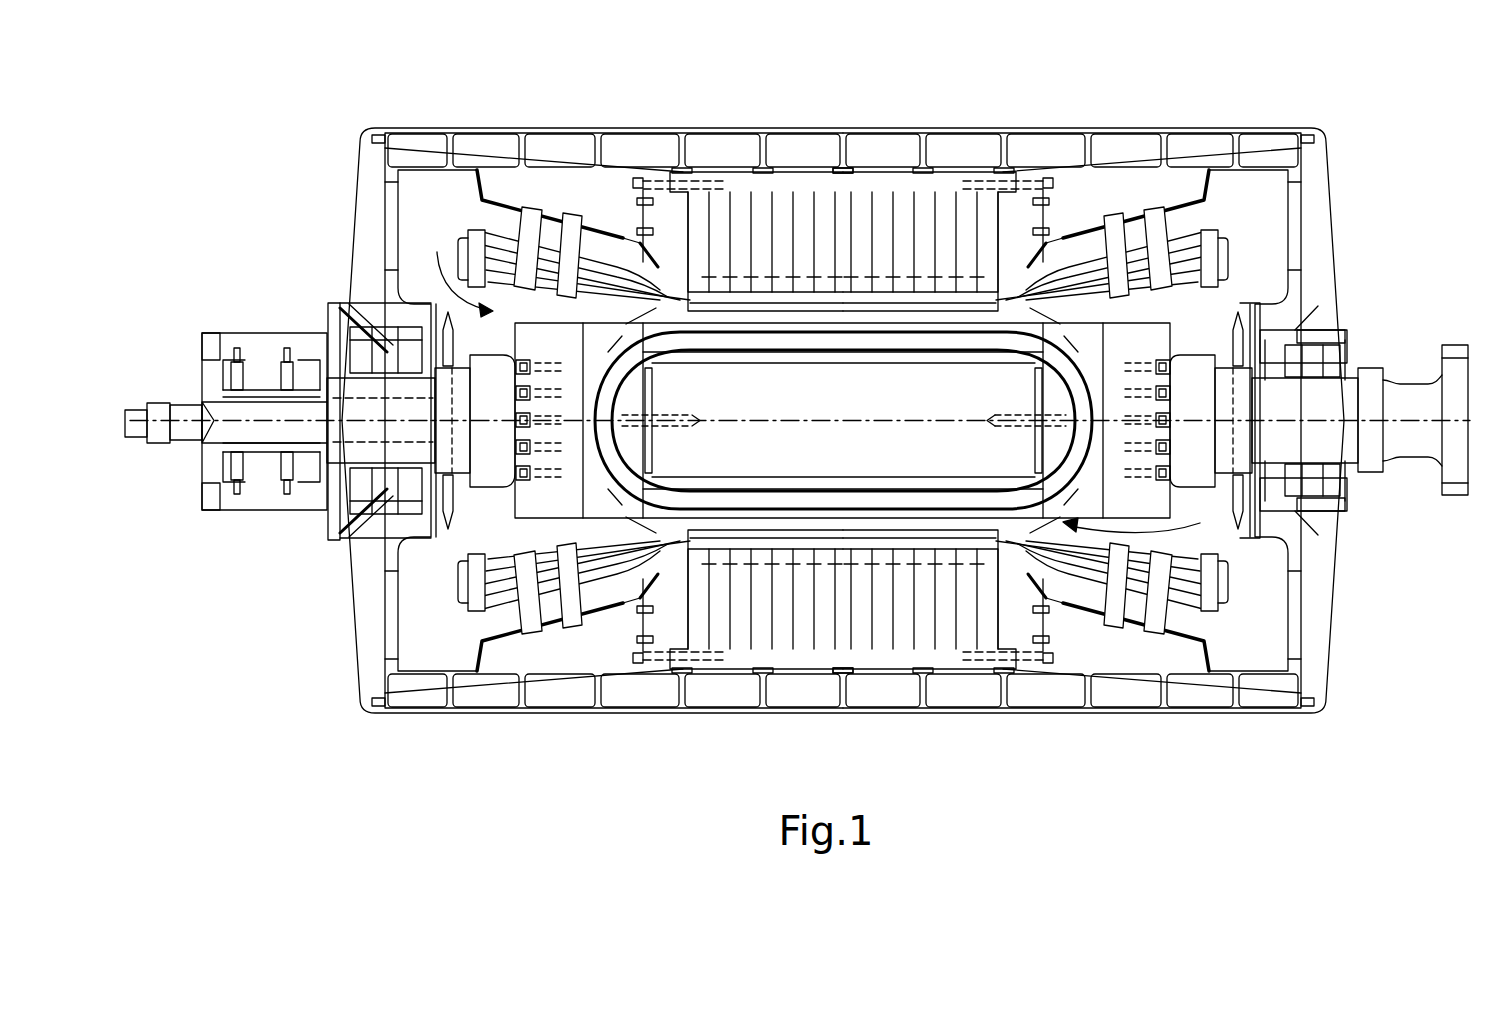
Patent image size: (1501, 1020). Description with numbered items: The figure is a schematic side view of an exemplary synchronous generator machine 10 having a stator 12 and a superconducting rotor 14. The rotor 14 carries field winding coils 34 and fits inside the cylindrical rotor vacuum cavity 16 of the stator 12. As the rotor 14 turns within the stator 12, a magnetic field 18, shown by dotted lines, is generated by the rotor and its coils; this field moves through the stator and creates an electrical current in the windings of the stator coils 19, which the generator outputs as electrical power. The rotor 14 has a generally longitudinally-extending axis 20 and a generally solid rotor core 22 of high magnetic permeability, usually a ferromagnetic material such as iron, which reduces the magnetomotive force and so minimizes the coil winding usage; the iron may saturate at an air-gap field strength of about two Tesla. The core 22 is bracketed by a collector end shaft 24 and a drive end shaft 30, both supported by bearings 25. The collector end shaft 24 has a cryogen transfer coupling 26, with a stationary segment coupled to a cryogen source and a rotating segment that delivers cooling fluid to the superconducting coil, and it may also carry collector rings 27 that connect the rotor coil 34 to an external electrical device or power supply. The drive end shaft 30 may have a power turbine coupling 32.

The synchronous generator machine 10 is at (536, 50).
The stator 12 is at (743, 210).
The rotor 14 is at (540, 514).
The rotor vacuum cavity 16 is at (823, 377).
The magnetic field 18 is at (950, 268).
The stator coils 19 is at (1185, 240).
The longitudinally-extending axis 20 is at (362, 398).
The rotor core 22 is at (774, 449).
The collector end shaft 24 is at (372, 398).
The bearings 25 is at (400, 527).
The cryogen transfer coupling 26 is at (178, 400).
The collector rings 27 is at (272, 498).
The drive end shaft 30 is at (1331, 400).
The power turbine coupling 32 is at (1462, 490).
The field winding coils 34 is at (1093, 334).